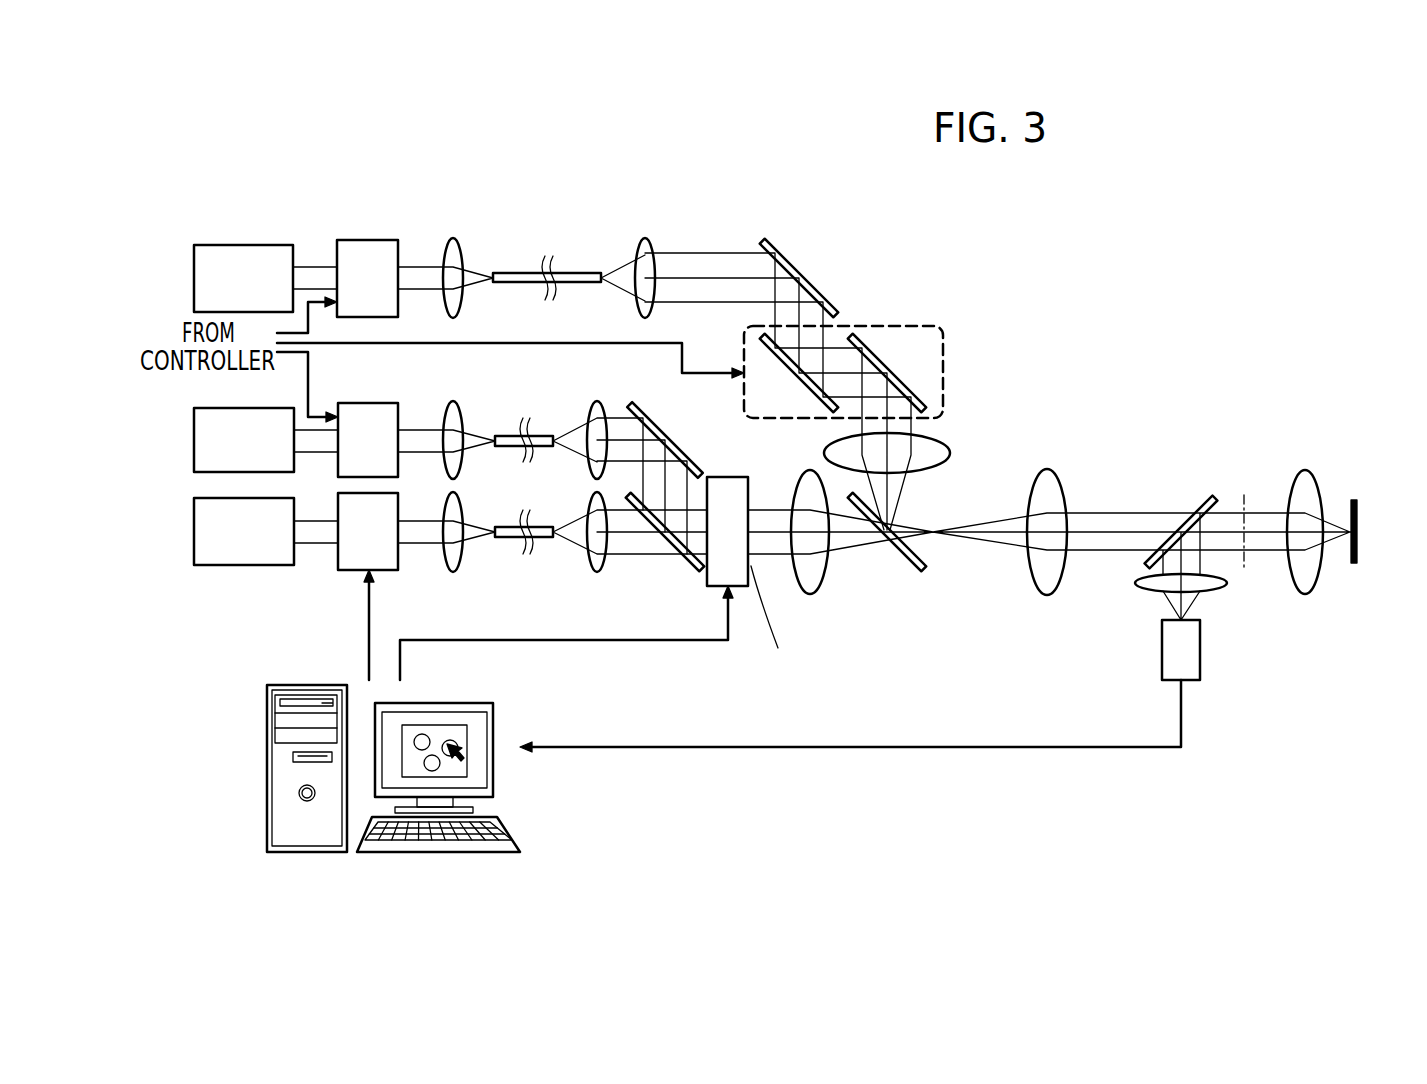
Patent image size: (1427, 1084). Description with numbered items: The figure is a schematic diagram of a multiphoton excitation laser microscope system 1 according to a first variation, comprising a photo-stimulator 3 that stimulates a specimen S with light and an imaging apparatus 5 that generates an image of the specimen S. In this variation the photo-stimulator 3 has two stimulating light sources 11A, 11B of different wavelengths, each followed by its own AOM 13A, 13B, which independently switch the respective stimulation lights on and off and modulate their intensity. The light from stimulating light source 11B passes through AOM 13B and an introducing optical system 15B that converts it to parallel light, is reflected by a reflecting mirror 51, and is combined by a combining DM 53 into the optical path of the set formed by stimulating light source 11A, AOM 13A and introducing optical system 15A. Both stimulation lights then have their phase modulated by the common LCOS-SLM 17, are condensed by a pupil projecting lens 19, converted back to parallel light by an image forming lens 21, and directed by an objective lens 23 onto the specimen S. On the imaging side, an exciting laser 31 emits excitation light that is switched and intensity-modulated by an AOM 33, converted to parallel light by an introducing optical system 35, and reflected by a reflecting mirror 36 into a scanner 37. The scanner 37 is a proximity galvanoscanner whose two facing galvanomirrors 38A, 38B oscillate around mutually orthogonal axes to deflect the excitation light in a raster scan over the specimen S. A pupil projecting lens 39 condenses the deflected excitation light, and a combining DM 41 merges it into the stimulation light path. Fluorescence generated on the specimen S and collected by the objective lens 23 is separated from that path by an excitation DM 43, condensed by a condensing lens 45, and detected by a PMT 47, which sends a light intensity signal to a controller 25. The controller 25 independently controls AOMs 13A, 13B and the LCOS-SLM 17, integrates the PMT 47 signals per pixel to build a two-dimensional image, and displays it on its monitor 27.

The microscope system 1 is at (1127, 222).
The photo-stimulator 3 is at (866, 665).
The imaging apparatus 5 is at (794, 190).
The stimulating light source 11A is at (246, 565).
The stimulating light source 11B is at (194, 437).
The AOM 13A is at (338, 556).
The AOM 13B is at (370, 403).
The introducing optical system 15A is at (665, 576).
The introducing optical system 15B is at (665, 403).
The LCOS-SLM 17 is at (730, 477).
The pupil projecting lens 19 is at (828, 574).
The image forming lens 21 is at (1033, 584).
The objective lens 23 is at (1305, 470).
The controller 25 is at (497, 871).
The monitor 27 is at (493, 720).
The exciting laser 31 is at (240, 245).
The AOM 33 is at (367, 240).
The introducing optical system 35 is at (665, 238).
The reflecting mirror 36 is at (810, 262).
The scanner 37 is at (943, 372).
The galvanomirror 38A is at (792, 381).
The galvanomirror 38B is at (880, 352).
The pupil projecting lens 39 is at (948, 450).
The combining DM 41 is at (899, 568).
The excitation DM 43 is at (1198, 498).
The condensing lens 45 is at (1222, 588).
The PMT 47 is at (1162, 650).
The reflecting mirror 51 is at (688, 445).
The combining DM 53 is at (690, 575).
The specimen S is at (1360, 513).